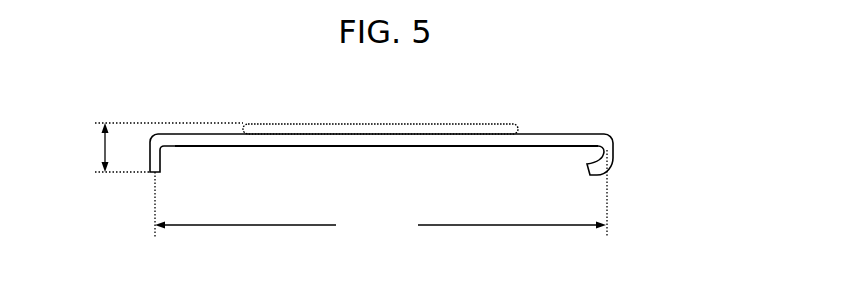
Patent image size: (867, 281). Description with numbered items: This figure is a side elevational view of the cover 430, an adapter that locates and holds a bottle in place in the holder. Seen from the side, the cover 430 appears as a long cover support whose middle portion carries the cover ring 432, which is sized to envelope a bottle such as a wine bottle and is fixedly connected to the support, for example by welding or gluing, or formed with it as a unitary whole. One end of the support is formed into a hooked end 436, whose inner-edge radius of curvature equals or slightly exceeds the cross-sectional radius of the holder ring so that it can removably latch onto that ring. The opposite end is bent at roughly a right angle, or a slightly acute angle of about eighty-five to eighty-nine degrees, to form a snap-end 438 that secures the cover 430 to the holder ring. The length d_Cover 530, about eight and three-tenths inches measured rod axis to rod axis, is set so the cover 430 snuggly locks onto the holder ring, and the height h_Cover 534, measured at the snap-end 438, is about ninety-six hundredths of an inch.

The cover 430 is at (450, 155).
The cover ring 432 is at (462, 124).
The hooked end 436 is at (586, 158).
The snap-end 438 is at (168, 157).
The length of the cover 530 is at (381, 193).
The height of the cover 534 is at (148, 147).